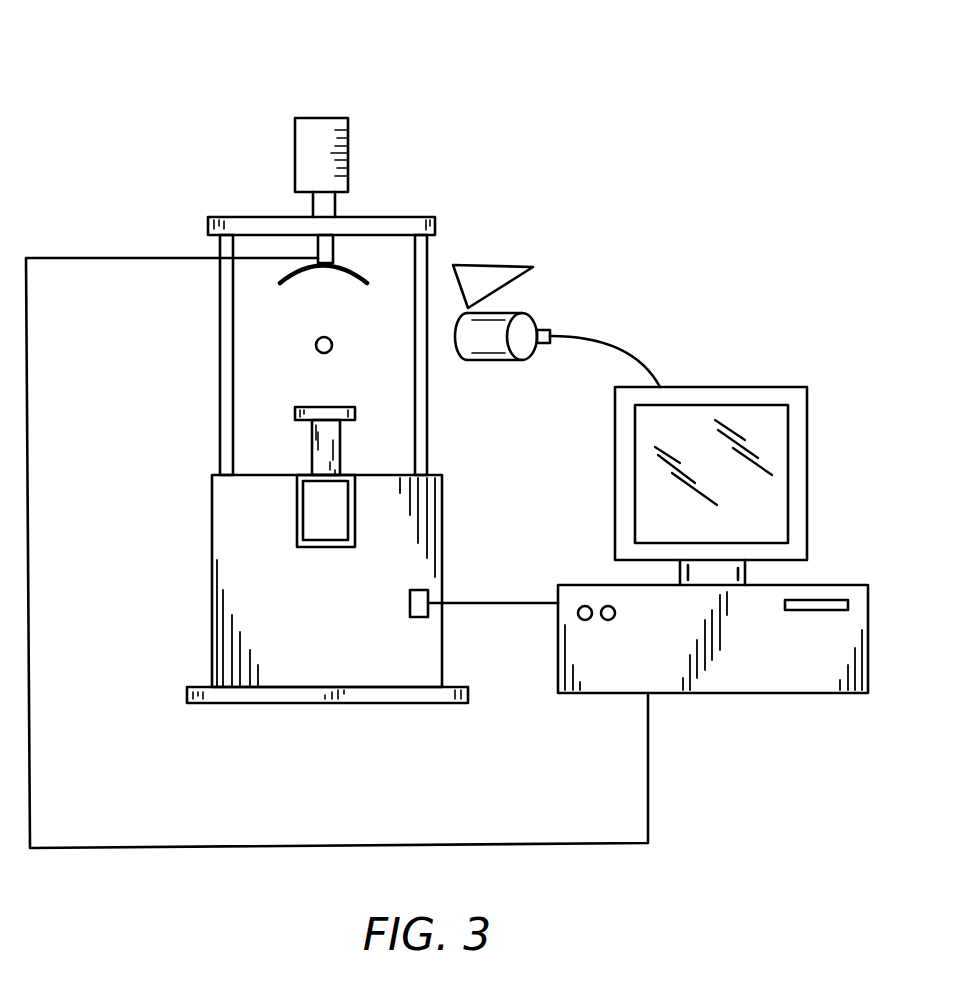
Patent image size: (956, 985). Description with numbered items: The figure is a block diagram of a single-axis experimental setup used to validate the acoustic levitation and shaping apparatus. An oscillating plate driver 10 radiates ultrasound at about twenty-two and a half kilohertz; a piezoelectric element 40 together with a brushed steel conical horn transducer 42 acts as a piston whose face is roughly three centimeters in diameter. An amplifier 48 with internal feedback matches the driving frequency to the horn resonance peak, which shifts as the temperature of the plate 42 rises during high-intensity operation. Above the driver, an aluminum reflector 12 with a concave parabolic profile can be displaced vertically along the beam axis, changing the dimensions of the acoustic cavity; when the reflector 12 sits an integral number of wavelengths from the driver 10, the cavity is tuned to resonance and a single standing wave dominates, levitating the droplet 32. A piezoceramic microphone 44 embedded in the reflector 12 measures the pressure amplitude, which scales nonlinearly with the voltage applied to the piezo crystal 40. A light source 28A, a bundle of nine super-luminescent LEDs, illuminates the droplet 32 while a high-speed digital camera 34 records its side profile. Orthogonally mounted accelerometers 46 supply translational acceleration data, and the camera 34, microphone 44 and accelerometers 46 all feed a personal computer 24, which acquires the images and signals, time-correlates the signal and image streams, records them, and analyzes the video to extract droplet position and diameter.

The oscillating plate driver 10 is at (292, 410).
The reflector 12 is at (355, 265).
The computer 24 is at (855, 627).
The light source 28A is at (483, 263).
The droplet 32 is at (317, 340).
The high-speed digital camera 34 is at (512, 310).
The piezoelectric element 40 is at (355, 513).
The brushed steel conical horn transducer 42 is at (355, 417).
The piezoceramic microphone 44 is at (323, 247).
The accelerometers 46 is at (430, 617).
The amplifier 48 is at (348, 118).